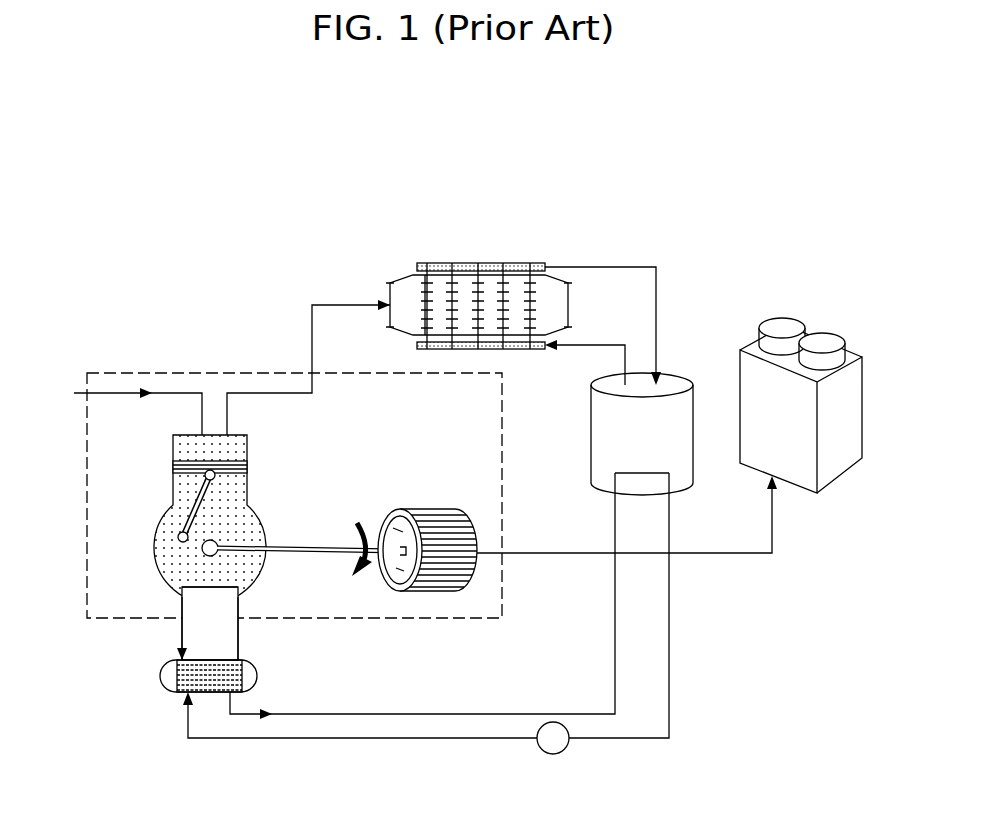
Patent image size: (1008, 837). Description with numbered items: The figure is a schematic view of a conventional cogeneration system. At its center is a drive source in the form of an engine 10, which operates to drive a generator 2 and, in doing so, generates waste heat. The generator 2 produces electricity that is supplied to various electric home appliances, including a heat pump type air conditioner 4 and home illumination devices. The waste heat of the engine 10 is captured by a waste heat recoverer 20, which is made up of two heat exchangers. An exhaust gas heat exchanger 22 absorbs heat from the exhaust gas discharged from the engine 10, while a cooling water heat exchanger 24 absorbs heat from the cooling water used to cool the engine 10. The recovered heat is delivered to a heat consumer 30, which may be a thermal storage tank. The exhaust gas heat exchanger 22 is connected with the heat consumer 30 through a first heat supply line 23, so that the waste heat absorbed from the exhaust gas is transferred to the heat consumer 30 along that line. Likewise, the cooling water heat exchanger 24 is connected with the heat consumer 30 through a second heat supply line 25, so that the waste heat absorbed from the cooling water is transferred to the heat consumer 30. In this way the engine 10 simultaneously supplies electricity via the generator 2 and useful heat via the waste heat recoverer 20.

The generator 2 is at (442, 580).
The heat pump type air conditioner 4 is at (830, 337).
The drive source (engine) 10 is at (162, 552).
The waste heat recoverer 20 is at (510, 252).
The exhaust gas heat exchanger 22 is at (477, 282).
The first heat supply line 23 is at (613, 267).
The cooling water heat exchanger 24 is at (183, 672).
The second heat supply line 25 is at (383, 739).
The heat consumer (thermal storage tank) 30 is at (672, 375).